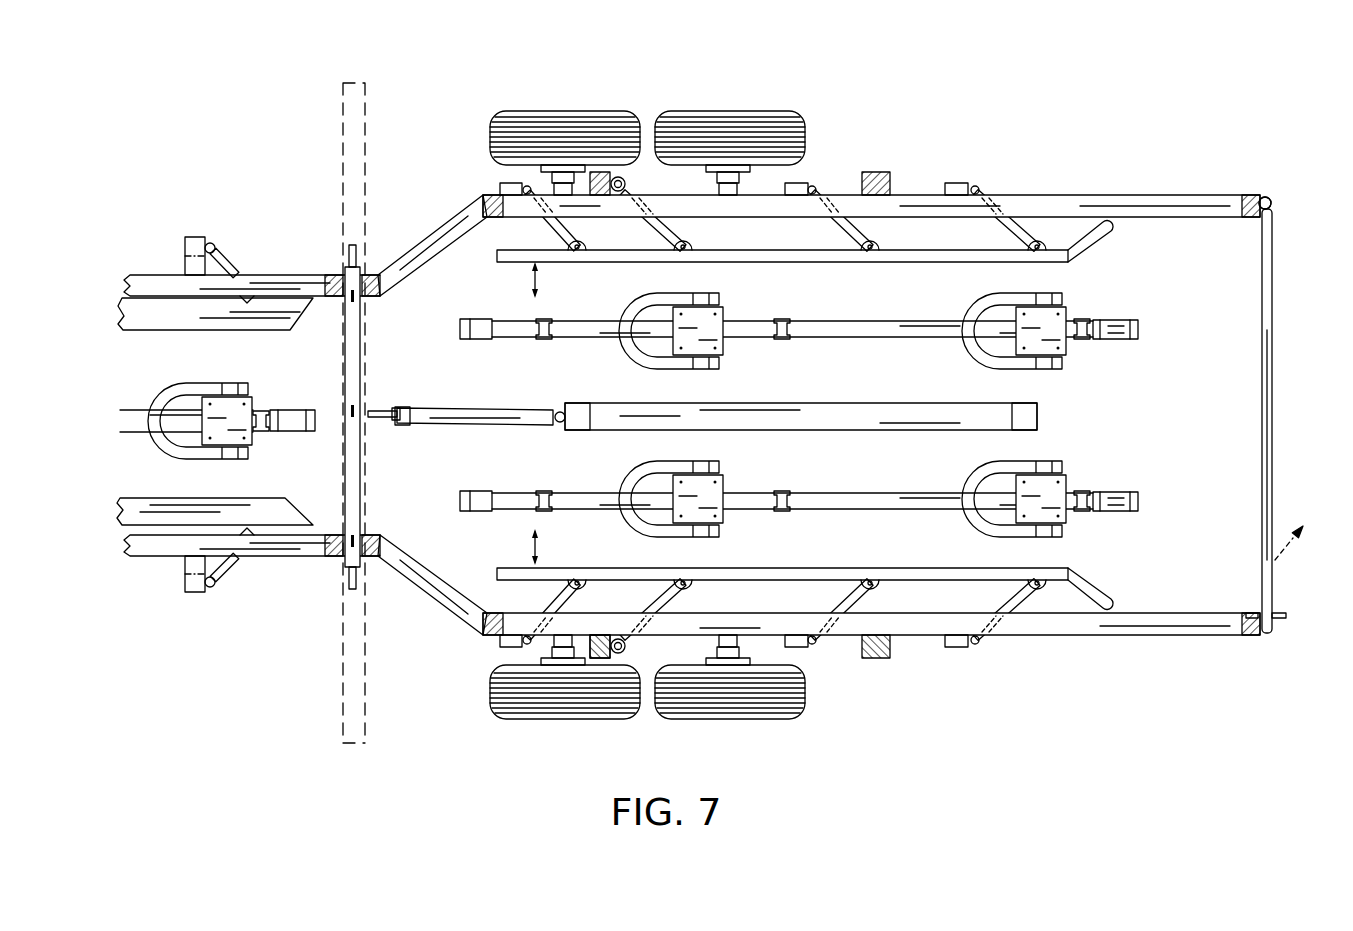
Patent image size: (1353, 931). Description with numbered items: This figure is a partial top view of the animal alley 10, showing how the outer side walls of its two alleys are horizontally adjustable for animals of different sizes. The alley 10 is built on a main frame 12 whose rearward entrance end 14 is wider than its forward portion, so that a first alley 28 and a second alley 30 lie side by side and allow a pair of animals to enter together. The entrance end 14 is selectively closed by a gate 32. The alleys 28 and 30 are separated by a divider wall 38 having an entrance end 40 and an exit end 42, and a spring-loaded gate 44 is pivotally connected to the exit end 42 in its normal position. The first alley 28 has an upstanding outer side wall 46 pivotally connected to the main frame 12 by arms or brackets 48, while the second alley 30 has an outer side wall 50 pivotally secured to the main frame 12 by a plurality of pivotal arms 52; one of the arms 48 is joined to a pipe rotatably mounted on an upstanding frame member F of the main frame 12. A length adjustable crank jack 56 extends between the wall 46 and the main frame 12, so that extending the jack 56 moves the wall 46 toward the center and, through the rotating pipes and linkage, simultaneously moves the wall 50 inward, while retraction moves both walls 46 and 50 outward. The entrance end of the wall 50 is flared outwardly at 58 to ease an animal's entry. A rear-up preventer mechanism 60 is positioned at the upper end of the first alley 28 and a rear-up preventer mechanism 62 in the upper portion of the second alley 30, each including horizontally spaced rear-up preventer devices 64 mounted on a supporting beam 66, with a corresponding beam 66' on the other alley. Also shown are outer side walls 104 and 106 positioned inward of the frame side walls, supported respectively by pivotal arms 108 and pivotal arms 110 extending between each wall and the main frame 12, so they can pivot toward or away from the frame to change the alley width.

The animal alley 10 is at (943, 157).
The main frame 12 is at (690, 415).
The entrance end 14 is at (1292, 188).
The first alley 28 is at (910, 486).
The second alley 30 is at (910, 316).
The gate 32 is at (1270, 402).
The divider wall 38 is at (830, 405).
The entrance end of divider wall 40 is at (1045, 416).
The exit end of divider wall 42 is at (578, 405).
The spring-loaded gate 44 is at (487, 412).
The outer side wall 46 is at (856, 569).
The arms or brackets 48 is at (848, 608).
The outer side wall 50 is at (1043, 262).
The pivotal arms 52 is at (1020, 227).
The crank jack 56 is at (1096, 605).
The flared entrance end 58 is at (662, 238).
The rear-up preventer mechanism 60 is at (797, 480).
The rear-up preventer mechanism 62 is at (810, 306).
The rear-up preventer devices 64 is at (628, 293).
The supporting beam 66 is at (1144, 467).
The end roller block 66' is at (1157, 303).
The outer side wall 104 is at (258, 513).
The outer side wall 106 is at (268, 310).
The pivotal arms 108 is at (228, 598).
The pivotal arms 110 is at (228, 258).
The upstanding frame member F is at (603, 660).